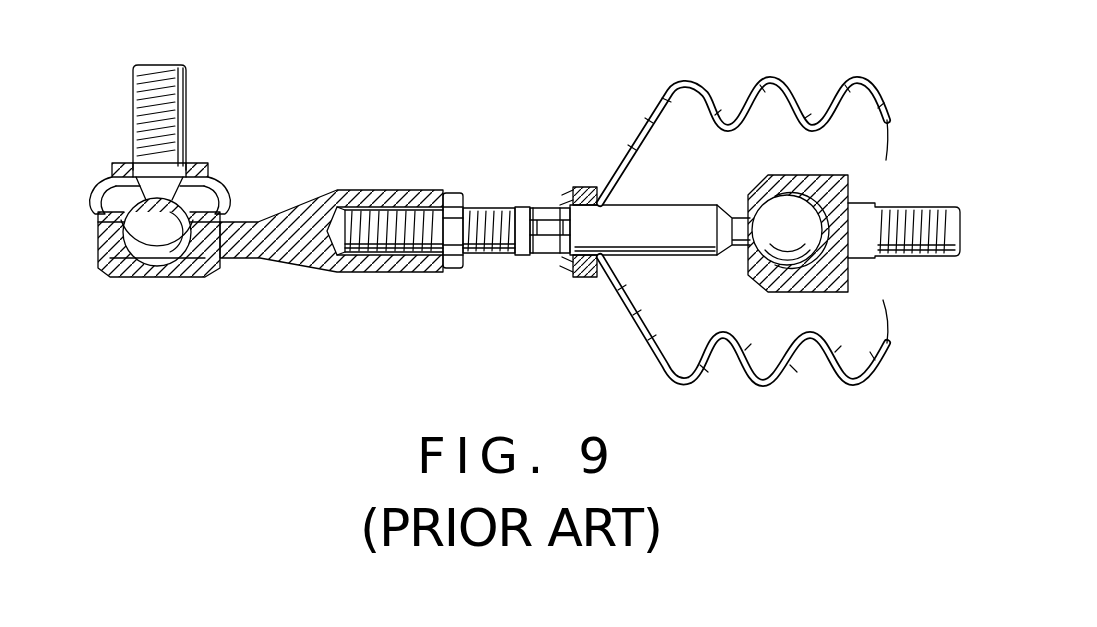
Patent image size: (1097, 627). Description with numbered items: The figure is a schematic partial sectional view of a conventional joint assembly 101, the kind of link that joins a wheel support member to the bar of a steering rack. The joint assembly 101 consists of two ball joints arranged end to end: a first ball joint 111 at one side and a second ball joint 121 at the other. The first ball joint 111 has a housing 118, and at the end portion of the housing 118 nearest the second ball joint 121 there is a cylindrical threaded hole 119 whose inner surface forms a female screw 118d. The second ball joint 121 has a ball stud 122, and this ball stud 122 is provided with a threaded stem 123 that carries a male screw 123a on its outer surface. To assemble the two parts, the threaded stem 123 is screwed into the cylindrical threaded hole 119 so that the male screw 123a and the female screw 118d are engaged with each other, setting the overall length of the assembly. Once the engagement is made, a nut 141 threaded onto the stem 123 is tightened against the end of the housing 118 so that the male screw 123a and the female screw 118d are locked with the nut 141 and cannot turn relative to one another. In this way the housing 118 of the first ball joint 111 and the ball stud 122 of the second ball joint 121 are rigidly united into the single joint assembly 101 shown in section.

The joint assembly 101 is at (447, 112).
The first ball joint 111 is at (247, 140).
The housing 118 is at (275, 262).
The female screw 118d is at (380, 215).
The cylindrical threaded hole 119 is at (343, 260).
The second ball joint 121 is at (620, 127).
The ball stud 122 is at (744, 141).
The threaded stem 123 is at (485, 253).
The male screw 123a is at (402, 250).
The nut 141 is at (454, 196).